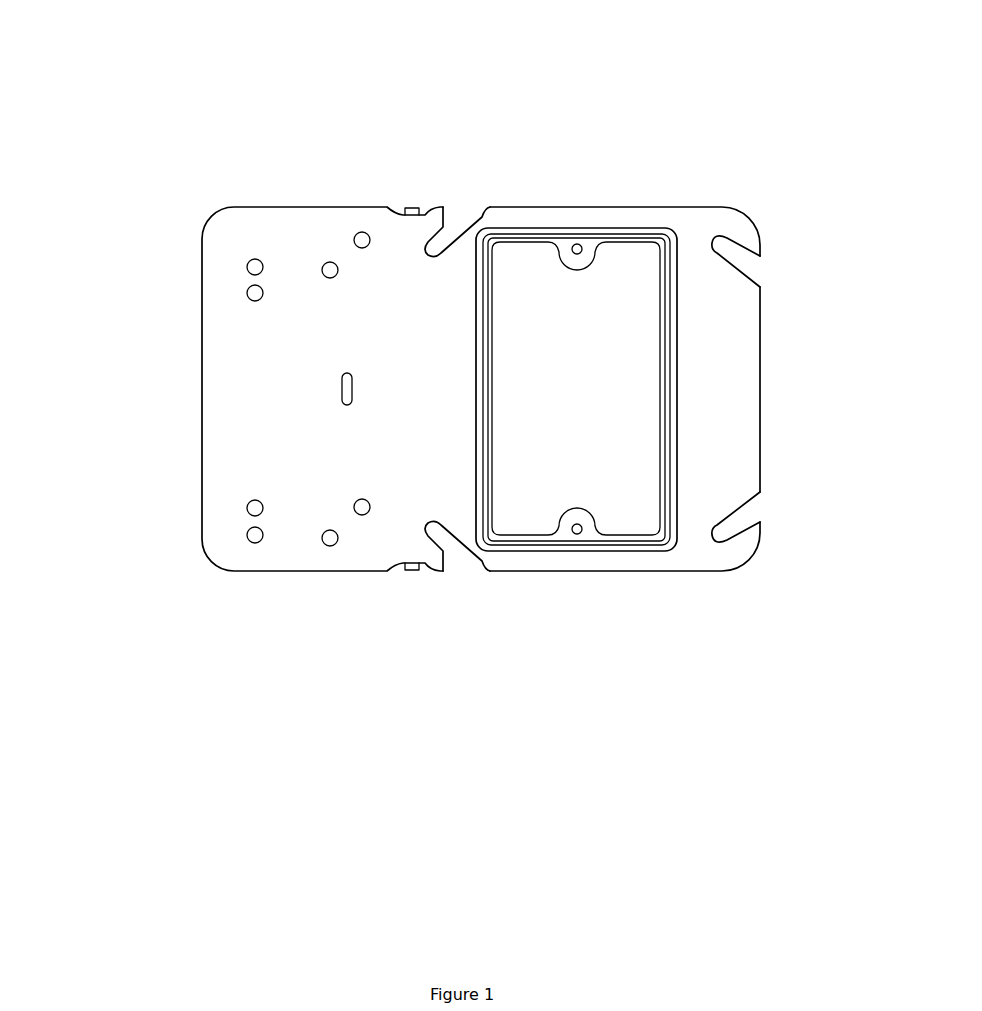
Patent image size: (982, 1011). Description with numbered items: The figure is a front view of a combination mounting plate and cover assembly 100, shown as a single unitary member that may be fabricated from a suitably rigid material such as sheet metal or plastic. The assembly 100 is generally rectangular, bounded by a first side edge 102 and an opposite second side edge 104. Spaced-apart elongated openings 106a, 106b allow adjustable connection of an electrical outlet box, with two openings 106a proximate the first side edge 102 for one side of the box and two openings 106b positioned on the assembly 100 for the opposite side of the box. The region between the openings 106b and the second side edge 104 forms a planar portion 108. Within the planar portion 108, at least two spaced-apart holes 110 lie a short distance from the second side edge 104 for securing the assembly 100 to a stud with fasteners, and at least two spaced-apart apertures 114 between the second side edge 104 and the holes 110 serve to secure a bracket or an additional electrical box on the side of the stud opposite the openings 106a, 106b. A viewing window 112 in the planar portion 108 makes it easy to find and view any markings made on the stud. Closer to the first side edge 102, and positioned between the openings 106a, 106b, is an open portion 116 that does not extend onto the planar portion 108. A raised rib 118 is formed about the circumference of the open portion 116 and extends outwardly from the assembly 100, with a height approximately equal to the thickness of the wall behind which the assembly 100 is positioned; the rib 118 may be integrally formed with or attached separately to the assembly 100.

The combination mounting plate and cover assembly 100 is at (467, 341).
The first side edge 102 is at (762, 369).
The second side edge 104 is at (202, 306).
The openings 106a is at (727, 253).
The openings 106b is at (433, 250).
The planar portion 108 is at (298, 333).
The holes 110 is at (331, 262).
The viewing window 112 is at (343, 391).
The apertures 114 is at (251, 289).
The open portion 116 is at (570, 360).
The raised rib 118 is at (661, 232).